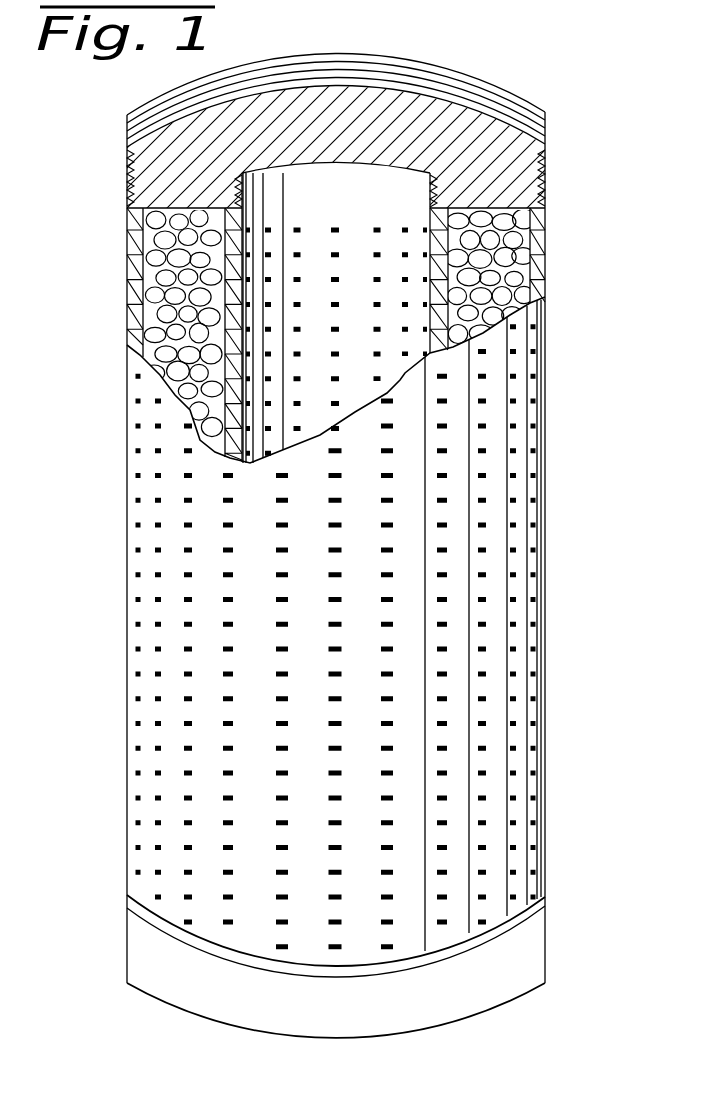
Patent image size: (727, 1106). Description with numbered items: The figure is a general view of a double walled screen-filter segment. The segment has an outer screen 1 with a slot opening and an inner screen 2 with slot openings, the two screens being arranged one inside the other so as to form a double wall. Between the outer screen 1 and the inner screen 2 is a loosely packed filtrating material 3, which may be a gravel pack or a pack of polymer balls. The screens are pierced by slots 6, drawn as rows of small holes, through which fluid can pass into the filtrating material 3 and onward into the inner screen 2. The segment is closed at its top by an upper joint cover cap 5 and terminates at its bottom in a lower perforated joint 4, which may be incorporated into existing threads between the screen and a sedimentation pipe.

The outer screen 1 is at (408, 366).
The inner screen 2 is at (447, 312).
The loosely packed filtrating material 3 is at (514, 305).
The lower perforated joint 4 is at (517, 946).
The upper joint cover cap 5 is at (507, 176).
The slots (holes) 6 is at (407, 303).